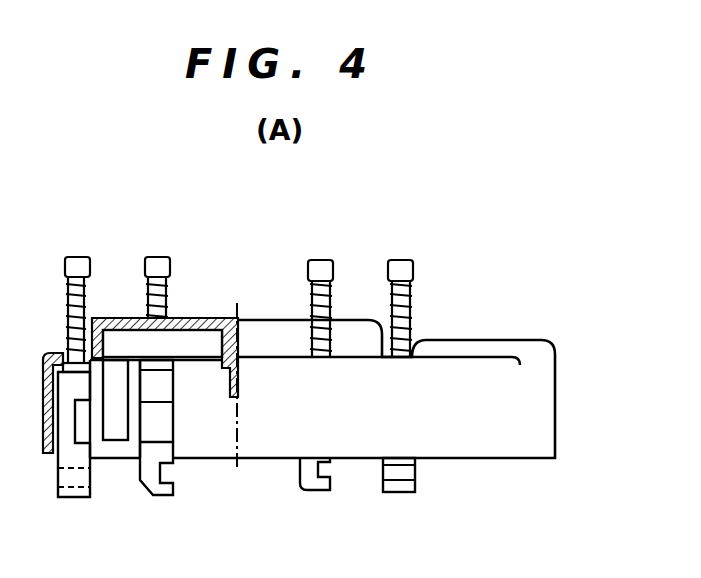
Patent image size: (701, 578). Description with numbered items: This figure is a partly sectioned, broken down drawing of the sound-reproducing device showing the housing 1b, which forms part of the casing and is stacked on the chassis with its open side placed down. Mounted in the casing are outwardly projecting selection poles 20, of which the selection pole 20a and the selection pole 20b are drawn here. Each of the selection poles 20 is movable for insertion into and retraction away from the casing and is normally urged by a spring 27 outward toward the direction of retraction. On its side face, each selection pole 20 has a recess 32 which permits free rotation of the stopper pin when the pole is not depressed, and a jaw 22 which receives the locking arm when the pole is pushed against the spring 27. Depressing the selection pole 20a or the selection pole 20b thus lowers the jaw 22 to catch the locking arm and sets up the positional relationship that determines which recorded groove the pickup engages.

The housing 1b is at (555, 393).
The selection poles 20 is at (235, 205).
The selection pole 20a is at (88, 262).
The selection pole 20b is at (168, 262).
The spring 27 is at (85, 302).
The recess 32 is at (150, 432).
The jaw 22 is at (173, 473).